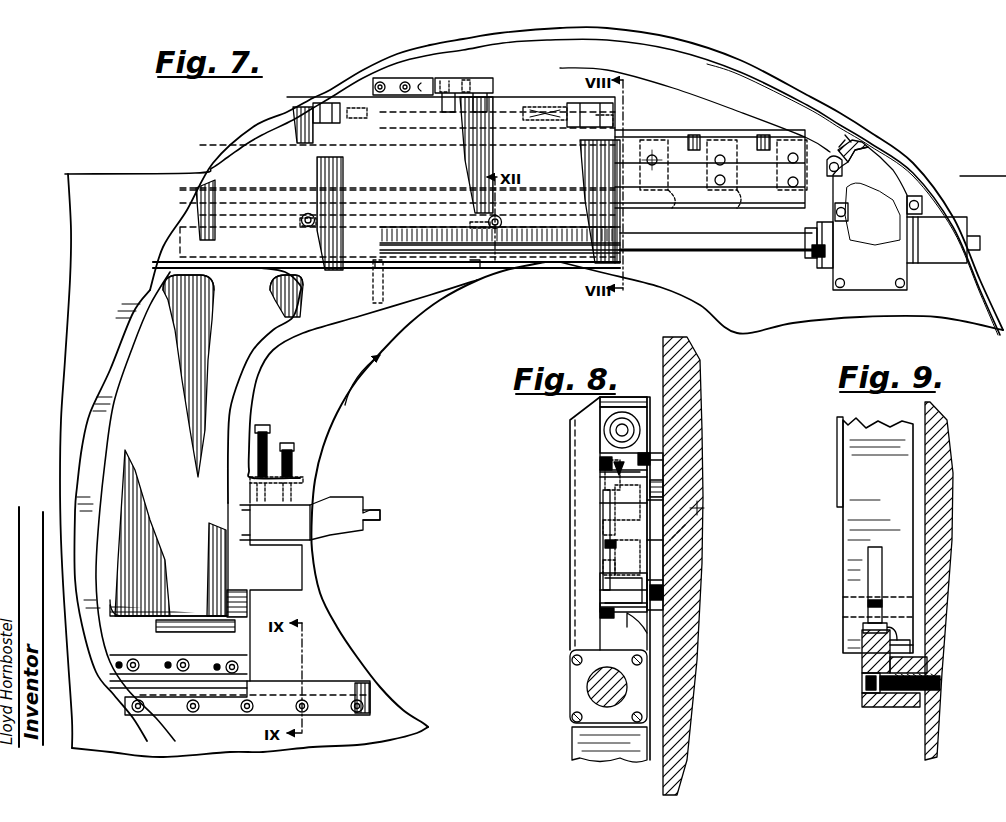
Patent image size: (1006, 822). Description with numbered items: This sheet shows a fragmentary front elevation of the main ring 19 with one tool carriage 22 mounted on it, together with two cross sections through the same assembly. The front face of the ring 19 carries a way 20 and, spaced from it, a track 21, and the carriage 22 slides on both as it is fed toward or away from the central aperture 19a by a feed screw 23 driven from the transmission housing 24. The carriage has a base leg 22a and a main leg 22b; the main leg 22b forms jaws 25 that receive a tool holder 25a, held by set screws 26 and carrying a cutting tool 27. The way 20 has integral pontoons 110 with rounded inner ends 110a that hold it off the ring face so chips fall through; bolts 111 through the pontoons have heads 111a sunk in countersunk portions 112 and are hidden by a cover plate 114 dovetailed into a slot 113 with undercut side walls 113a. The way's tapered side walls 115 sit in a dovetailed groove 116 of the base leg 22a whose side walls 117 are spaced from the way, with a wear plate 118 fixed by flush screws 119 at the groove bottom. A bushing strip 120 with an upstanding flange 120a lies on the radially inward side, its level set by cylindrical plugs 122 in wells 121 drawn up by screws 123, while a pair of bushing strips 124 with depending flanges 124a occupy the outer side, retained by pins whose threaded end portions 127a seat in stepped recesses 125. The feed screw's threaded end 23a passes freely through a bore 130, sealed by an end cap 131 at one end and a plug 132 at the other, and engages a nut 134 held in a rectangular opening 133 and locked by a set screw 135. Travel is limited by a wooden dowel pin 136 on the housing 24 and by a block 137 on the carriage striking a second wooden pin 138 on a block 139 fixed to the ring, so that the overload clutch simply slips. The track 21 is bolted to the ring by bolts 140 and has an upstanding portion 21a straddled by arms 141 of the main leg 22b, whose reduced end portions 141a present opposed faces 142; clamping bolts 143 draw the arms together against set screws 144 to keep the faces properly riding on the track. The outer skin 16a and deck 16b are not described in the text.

In FIG. 7, the roof outer skin 16a is at (803, 92).
In FIG. 7, the roof deck 16b is at (115, 187).
In FIG. 7, the main ring 19 is at (760, 322).
In FIG. 8, the main ring 19 is at (687, 413).
In FIG. 9, the main ring 19 is at (941, 472).
In FIG. 7, the aperture 19a is at (664, 316).
In FIG. 7, the way 20 is at (680, 130).
In FIG. 8, the way 20 is at (645, 480).
In FIG. 7, the track 21 is at (348, 683).
In FIG. 9, the track 21 is at (903, 708).
In FIG. 9, the upstanding track portion 21a is at (877, 644).
In FIG. 7, the tool carriage 22 is at (307, 334).
In FIG. 8, the tool carriage 22 is at (562, 572).
In FIG. 7, the base leg 22a is at (569, 280).
In FIG. 8, the base leg 22a is at (565, 582).
In FIG. 7, the main leg 22b is at (220, 380).
In FIG. 9, the main leg 22b is at (860, 510).
In FIG. 7, the feed screw 23 is at (732, 247).
In FIG. 8, the feed screw 23 is at (597, 694).
In FIG. 7, the threaded end of feed screw 23a is at (475, 272).
In FIG. 7, the transmission housing 24 is at (880, 213).
In FIG. 7, the jaws 25 is at (295, 561).
In FIG. 7, the tool holder 25a is at (343, 510).
In FIG. 7, the set screws 26 is at (266, 440).
In FIG. 7, the cutting tool 27 is at (375, 510).
In FIG. 7, the pontoons 110 is at (730, 145).
In FIG. 8, the pontoons 110 is at (663, 493).
In FIG. 7, the rounded inner ends 110a is at (735, 195).
In FIG. 8, the rounded inner ends 110a is at (657, 594).
In FIG. 7, the bolts 111 is at (652, 142).
In FIG. 8, the bolts 111 is at (697, 513).
In FIG. 8, the bolt heads 111a is at (603, 526).
In FIG. 8, the countersunk portions 112 is at (623, 590).
In FIG. 8, the slot 113 is at (618, 546).
In FIG. 8, the undercut side walls 113a is at (610, 473).
In FIG. 7, the cover plate 114 is at (680, 183).
In FIG. 8, the cover plate 114 is at (615, 505).
In FIG. 8, the tapered side walls 115 is at (610, 464).
In FIG. 8, the dovetailed groove 116 is at (603, 572).
In FIG. 8, the groove side walls 117 is at (640, 416).
In FIG. 8, the wear plate 118 is at (600, 591).
In FIG. 8, the screws 119 is at (605, 490).
In FIG. 7, the bushing strip 120 is at (365, 210).
In FIG. 8, the bushing strip 120 is at (648, 607).
In FIG. 8, the upstanding flange 120a is at (647, 605).
In FIG. 7, the cylindrical wells 121 is at (328, 214).
In FIG. 7, the cylindrical plug 122 is at (305, 223).
In FIG. 7, the screw 123 is at (308, 213).
In FIG. 7, the bushing strips 124 is at (368, 115).
In FIG. 8, the bushing strips 124 is at (600, 456).
In FIG. 7, the depending flanges 124a is at (600, 123).
In FIG. 7, the stepped recesses 125 is at (347, 102).
In FIG. 8, the threaded end portion of pin 127a is at (624, 426).
In FIG. 7, the cylindrical bore 130 is at (252, 263).
In FIG. 8, the end cap 131 is at (580, 678).
In FIG. 7, the plug 132 is at (175, 258).
In FIG. 7, the rectangular opening 133 is at (360, 268).
In FIG. 7, the nut 134 is at (340, 270).
In FIG. 7, the set screw 135 is at (491, 280).
In FIG. 7, the wooden dowel pin 136 is at (811, 260).
In FIG. 7, the block 137 is at (463, 82).
In FIG. 7, the second wooden pin 138 is at (430, 78).
In FIG. 7, the block 139 is at (392, 80).
In FIG. 9, the bolts 140 is at (860, 687).
In FIG. 9, the arms 141 is at (857, 577).
In FIG. 9, the reduced end portions 141a is at (870, 627).
In FIG. 9, the opposed faces 142 is at (860, 638).
In FIG. 7, the clamping bolts 143 is at (187, 663).
In FIG. 9, the clamping bolts 143 is at (890, 597).
In FIG. 7, the set screw 144 is at (176, 663).
In FIG. 9, the set screw 144 is at (870, 604).